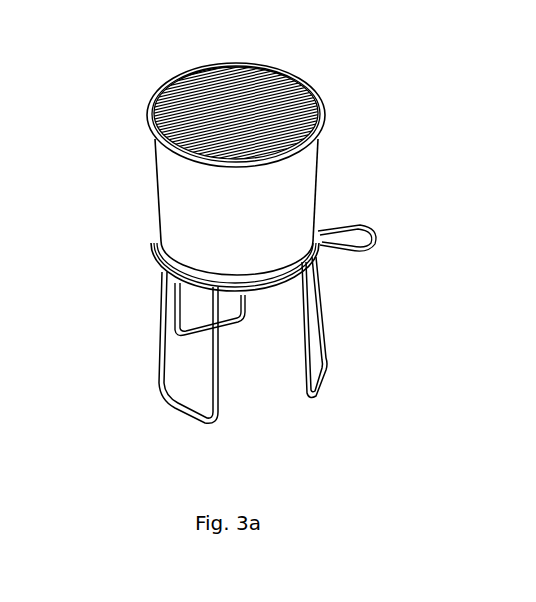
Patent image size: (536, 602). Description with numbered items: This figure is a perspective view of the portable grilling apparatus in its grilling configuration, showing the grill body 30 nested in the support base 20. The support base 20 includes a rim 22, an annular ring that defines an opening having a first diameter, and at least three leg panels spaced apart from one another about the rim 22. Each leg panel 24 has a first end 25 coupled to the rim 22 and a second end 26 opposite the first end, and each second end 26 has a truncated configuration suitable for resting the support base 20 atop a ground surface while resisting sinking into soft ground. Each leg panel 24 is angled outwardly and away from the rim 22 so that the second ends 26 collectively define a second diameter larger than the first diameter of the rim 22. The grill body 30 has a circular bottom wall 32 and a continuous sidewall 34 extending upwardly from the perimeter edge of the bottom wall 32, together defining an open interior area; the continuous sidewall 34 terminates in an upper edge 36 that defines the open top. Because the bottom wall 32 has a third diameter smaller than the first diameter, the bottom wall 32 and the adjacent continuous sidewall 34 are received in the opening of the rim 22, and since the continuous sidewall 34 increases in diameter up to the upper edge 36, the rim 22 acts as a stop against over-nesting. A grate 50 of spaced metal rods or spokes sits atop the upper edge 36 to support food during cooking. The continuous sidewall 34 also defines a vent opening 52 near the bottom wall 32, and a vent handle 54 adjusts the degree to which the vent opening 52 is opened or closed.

The support base 20 is at (134, 314).
The rim 22 is at (270, 292).
The leg panel 24 is at (158, 367).
The first end 25 is at (139, 258).
The second end 26 is at (331, 420).
The grill body 30 is at (344, 182).
The bottom wall 32 is at (193, 268).
The continuous sidewall 34 is at (236, 227).
The upper edge 36 is at (280, 70).
The grate 50 is at (324, 106).
The vent opening 52 is at (317, 257).
The vent handle 54 is at (376, 231).